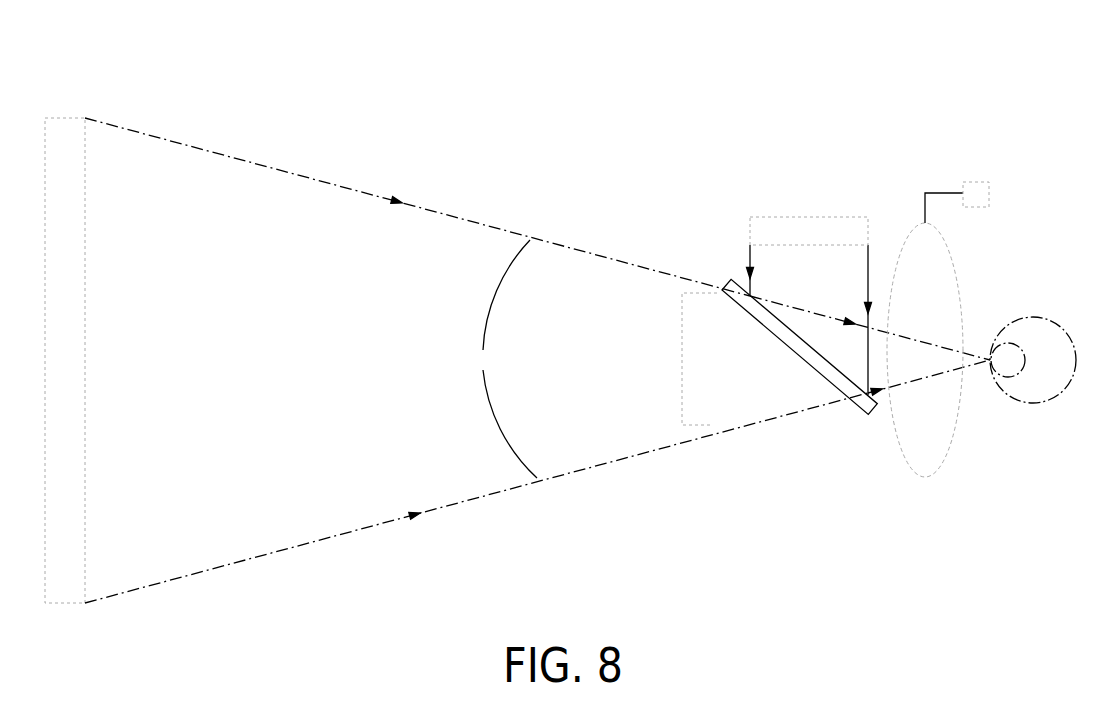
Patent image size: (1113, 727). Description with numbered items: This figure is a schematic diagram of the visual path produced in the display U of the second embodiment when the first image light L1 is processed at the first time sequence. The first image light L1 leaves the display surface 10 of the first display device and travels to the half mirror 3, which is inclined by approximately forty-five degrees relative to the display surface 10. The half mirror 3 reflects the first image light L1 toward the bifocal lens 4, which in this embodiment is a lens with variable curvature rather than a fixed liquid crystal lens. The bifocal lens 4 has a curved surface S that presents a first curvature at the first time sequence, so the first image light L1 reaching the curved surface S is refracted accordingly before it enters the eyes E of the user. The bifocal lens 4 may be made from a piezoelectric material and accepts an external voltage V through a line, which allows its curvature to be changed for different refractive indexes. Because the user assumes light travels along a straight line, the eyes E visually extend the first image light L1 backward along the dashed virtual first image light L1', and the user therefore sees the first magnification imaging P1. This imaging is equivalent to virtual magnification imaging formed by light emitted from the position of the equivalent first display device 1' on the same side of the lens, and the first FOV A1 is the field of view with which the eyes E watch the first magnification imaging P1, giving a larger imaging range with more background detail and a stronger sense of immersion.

The display U is at (516, 40).
The first magnification imaging P1 is at (54, 117).
The virtual first image light L1' is at (476, 359).
The first image light L1 is at (856, 316).
The display surface 10 is at (808, 245).
The half mirror 3 is at (873, 413).
The equivalent first display device 1' is at (674, 359).
The first FOV A1 is at (490, 359).
The bifocal lens 4 is at (948, 448).
The curved surface S is at (905, 234).
The external voltage V is at (990, 192).
The eyes E is at (1057, 320).